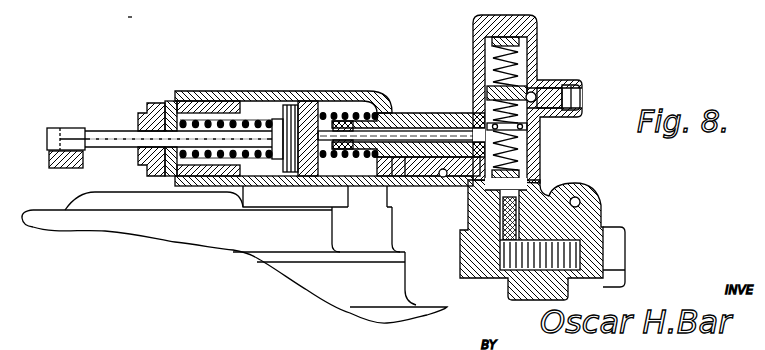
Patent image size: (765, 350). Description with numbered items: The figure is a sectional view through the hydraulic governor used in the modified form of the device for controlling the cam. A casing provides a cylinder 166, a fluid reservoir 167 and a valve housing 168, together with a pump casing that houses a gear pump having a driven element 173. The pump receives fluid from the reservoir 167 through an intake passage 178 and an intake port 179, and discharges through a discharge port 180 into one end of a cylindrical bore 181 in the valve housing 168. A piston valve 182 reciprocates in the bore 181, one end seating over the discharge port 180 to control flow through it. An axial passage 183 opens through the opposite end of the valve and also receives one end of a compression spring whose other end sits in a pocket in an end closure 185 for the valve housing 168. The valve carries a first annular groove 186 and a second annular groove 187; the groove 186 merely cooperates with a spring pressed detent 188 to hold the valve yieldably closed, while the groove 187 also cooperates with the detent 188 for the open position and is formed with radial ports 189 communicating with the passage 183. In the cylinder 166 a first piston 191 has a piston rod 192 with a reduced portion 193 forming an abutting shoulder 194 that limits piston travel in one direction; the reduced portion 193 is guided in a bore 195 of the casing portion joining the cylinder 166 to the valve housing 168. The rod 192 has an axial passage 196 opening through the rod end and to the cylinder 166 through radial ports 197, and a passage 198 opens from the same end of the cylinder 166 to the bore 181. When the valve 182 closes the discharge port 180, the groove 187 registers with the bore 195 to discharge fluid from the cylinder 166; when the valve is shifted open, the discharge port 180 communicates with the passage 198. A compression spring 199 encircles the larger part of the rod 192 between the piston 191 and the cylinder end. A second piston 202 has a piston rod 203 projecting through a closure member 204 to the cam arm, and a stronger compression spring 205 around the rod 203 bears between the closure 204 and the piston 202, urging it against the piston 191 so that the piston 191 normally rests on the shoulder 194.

The fluid reservoir 167 is at (141, 9).
The piston rod 203 is at (123, 130).
The closure member 204 is at (186, 91).
The compression spring 205 is at (215, 119).
The cylinder 166 is at (272, 91).
The second piston 202 is at (278, 176).
The compression spring 199 is at (338, 110).
The first piston 191 is at (311, 101).
The piston rod 192 is at (360, 112).
The passage 196 is at (413, 121).
The radial ports 197 is at (343, 157).
The abutting shoulder 194 is at (390, 110).
The bore 195 is at (423, 160).
The reduced portion 193 is at (400, 163).
The radial ports 189 is at (443, 178).
The passage 198 is at (500, 205).
The discharge port 180 is at (505, 235).
The driven element 173 is at (500, 288).
The intake passage 178 is at (598, 192).
The intake port 179 is at (603, 214).
The end closure 185 is at (537, 17).
The valve housing 168 is at (527, 58).
The cylindrical bore 181 is at (487, 64).
The annular groove 186 is at (490, 102).
The spring pressed detent 188 is at (580, 84).
The annular groove 187 is at (530, 128).
The axial passage 183 is at (527, 147).
The piston valve 182 is at (527, 173).